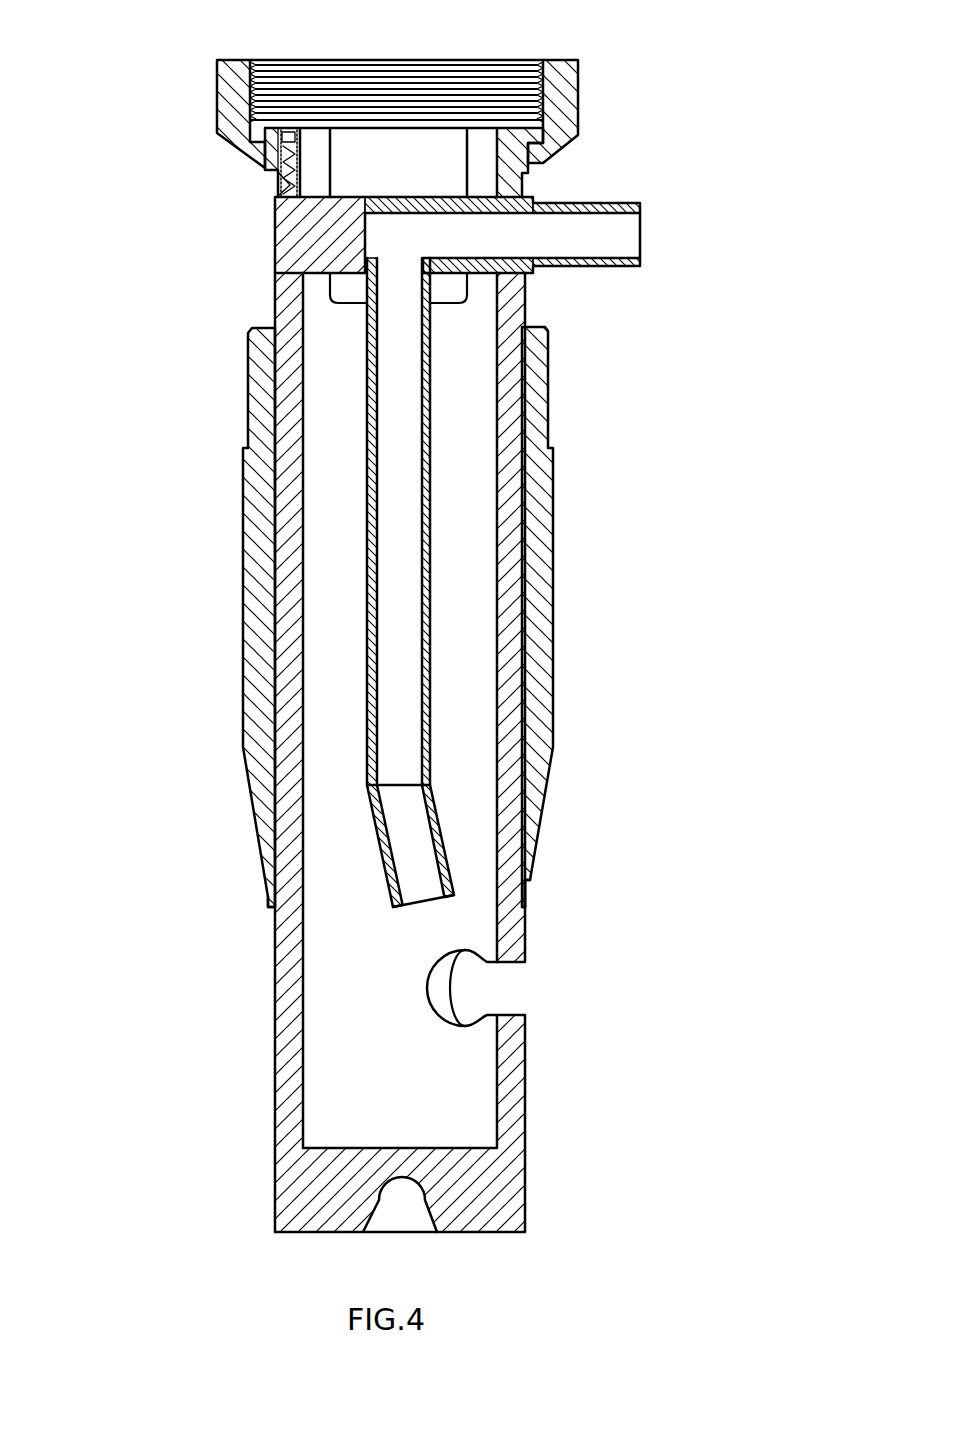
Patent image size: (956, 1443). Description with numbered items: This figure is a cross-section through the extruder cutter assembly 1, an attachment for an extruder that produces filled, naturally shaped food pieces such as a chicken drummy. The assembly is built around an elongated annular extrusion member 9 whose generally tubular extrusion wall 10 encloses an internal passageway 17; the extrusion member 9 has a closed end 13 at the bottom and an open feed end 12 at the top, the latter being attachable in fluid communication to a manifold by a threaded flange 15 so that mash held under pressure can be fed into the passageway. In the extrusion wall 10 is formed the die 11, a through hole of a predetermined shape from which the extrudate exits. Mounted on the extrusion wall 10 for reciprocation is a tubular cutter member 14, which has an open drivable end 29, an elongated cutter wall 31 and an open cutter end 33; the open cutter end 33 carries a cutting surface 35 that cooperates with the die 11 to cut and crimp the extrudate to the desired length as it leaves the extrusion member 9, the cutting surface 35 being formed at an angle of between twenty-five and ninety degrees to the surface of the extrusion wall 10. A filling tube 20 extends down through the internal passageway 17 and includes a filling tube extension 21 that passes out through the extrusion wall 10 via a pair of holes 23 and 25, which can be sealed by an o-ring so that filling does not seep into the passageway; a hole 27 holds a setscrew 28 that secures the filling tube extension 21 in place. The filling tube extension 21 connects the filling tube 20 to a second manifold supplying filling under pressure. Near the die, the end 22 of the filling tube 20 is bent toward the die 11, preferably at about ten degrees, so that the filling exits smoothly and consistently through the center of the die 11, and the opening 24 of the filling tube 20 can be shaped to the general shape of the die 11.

The extruder cutter assembly 1 is at (150, 205).
The annular extrusion member 9 is at (508, 1206).
The tubular extrusion wall 10 is at (410, 788).
The die 11 is at (510, 968).
The open feed end 12 is at (368, 107).
The closed end 13 is at (295, 1233).
The tubular cutter member 14 is at (552, 552).
The threaded flange 15 is at (568, 96).
The internal passageway 17 is at (466, 700).
The filling tube 20 is at (417, 634).
The filling tube extension 21 is at (628, 206).
The end of the filling tube 22 is at (446, 880).
The hole 23 is at (522, 204).
The opening of the filling tube 24 is at (415, 910).
The hole 25 is at (464, 240).
The hole 27 is at (276, 178).
The setscrew 28 is at (293, 163).
The open drivable end 29 is at (580, 607).
The elongated cutter wall 31 is at (214, 617).
The open cutter end 33 is at (270, 885).
The cutting surface 35 is at (530, 890).